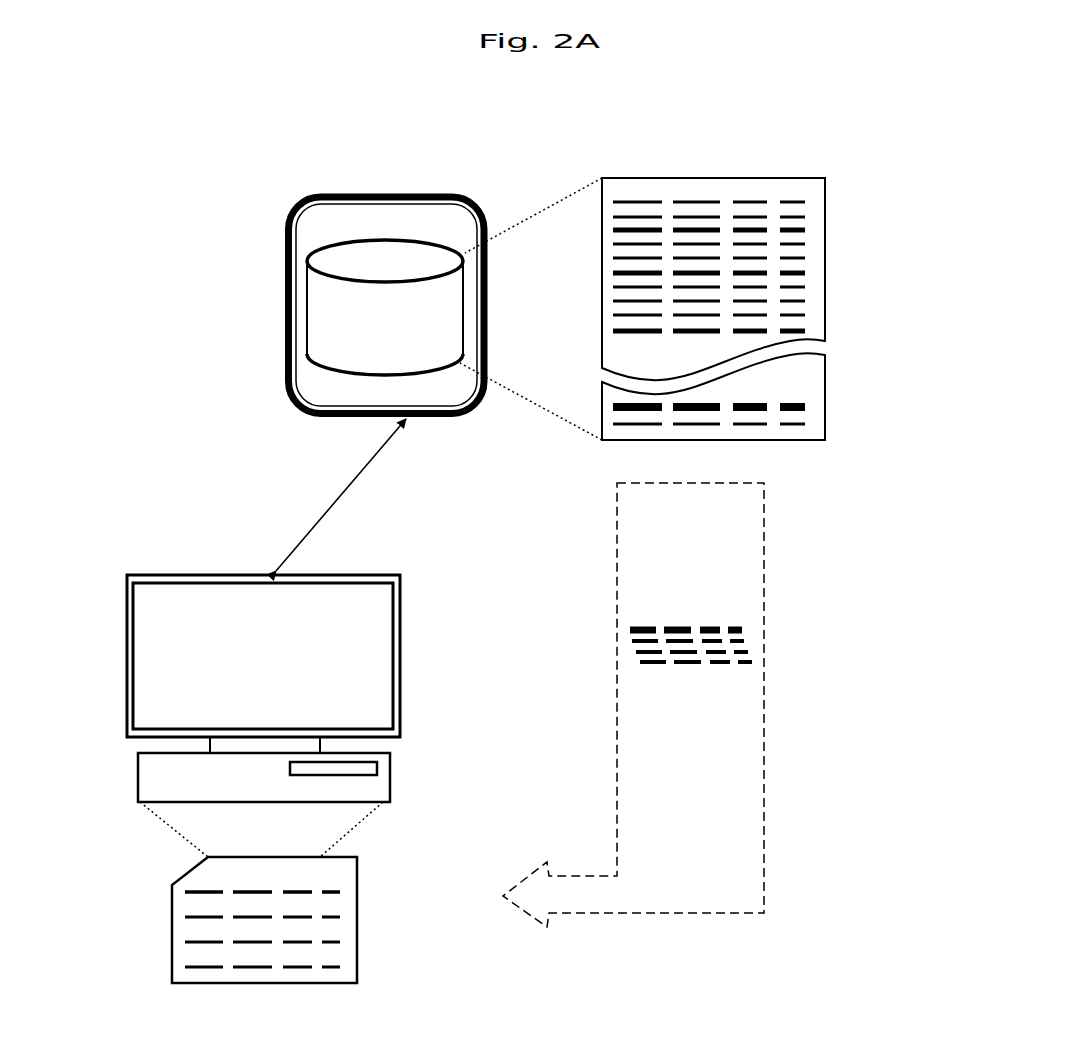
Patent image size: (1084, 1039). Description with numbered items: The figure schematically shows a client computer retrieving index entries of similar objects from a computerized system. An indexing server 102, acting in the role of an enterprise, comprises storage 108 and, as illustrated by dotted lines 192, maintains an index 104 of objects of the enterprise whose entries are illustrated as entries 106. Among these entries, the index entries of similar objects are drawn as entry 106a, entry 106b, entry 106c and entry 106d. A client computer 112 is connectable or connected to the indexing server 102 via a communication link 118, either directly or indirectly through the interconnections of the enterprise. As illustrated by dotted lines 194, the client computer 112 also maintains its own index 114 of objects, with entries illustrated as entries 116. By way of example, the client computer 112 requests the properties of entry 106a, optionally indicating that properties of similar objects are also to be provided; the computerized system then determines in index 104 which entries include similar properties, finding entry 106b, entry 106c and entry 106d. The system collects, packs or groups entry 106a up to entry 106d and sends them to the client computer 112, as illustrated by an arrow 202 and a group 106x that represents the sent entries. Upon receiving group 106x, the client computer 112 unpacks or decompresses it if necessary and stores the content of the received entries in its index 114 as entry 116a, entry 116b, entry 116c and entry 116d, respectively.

The indexing server 102 is at (285, 228).
The storage 108 is at (307, 282).
The dotted lines 192 is at (557, 207).
The index 104 is at (602, 298).
The entries 106 is at (753, 289).
The entry 106a is at (803, 407).
The entry 106b is at (803, 331).
The entry 106c is at (803, 273).
The entry 106d is at (803, 230).
The communication link 118 is at (342, 493).
The client computer 112 is at (186, 574).
The dotted lines 194 is at (180, 832).
The index 114 is at (172, 887).
The entries 116 is at (284, 906).
The entry 116a is at (337, 890).
The entry 116b is at (337, 916).
The entry 116c is at (337, 941).
The entry 116d is at (337, 966).
The arrow 202 is at (764, 785).
The group 106x is at (749, 627).